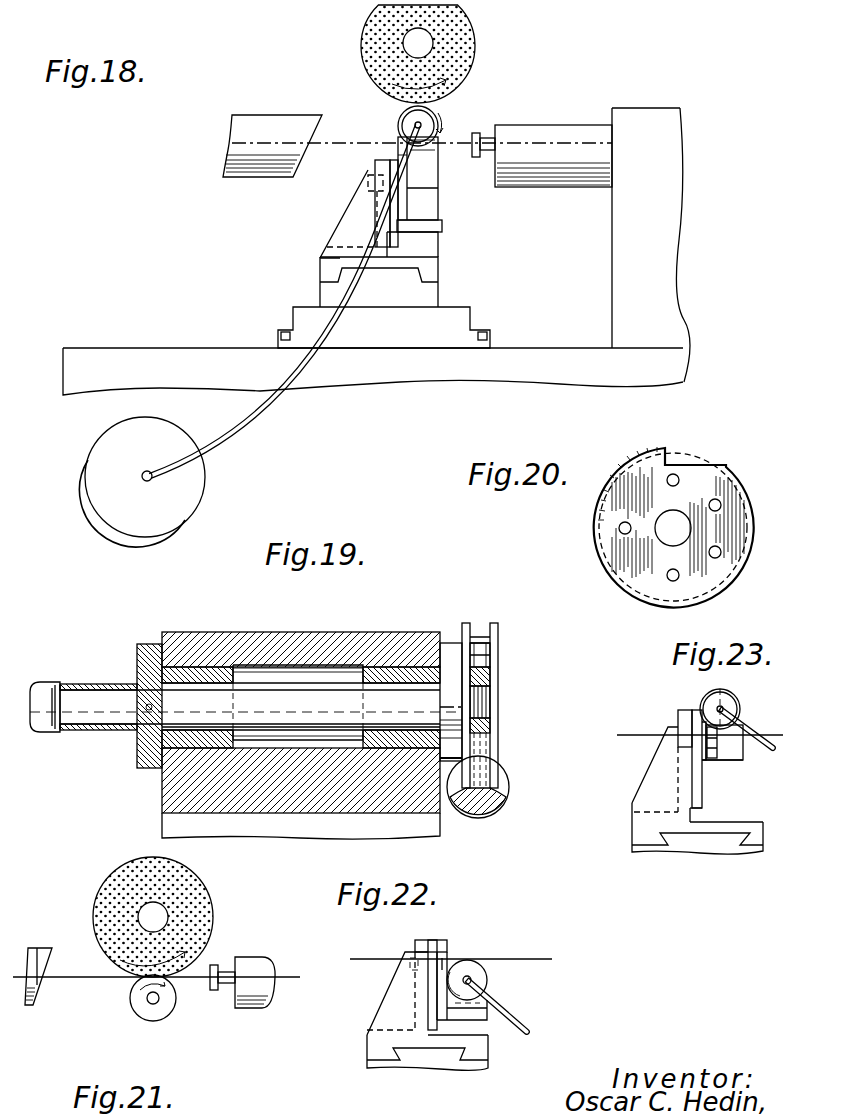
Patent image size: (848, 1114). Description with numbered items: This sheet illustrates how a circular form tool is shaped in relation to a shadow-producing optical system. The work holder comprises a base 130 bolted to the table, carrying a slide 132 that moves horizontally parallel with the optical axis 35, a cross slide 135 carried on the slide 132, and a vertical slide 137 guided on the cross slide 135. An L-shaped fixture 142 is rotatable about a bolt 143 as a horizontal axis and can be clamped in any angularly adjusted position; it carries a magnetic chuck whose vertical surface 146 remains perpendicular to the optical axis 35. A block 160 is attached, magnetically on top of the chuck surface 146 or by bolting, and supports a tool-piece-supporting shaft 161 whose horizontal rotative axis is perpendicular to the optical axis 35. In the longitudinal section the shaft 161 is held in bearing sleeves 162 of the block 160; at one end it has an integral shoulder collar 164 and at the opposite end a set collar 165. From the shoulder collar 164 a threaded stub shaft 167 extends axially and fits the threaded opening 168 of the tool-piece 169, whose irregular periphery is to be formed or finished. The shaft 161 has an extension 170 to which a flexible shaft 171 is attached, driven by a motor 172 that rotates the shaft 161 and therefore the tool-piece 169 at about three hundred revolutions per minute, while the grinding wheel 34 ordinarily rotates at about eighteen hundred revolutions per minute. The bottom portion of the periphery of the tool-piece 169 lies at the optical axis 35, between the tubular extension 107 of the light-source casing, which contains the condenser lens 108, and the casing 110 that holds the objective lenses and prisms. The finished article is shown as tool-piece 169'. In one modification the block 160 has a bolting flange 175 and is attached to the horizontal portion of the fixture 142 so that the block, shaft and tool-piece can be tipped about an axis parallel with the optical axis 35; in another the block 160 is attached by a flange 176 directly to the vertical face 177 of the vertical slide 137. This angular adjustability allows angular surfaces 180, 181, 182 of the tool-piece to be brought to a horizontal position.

In FIG. 18, the grinding wheel 34 is at (476, 42).
In FIG. 21, the grinding wheel 34 is at (204, 893).
In FIG. 18, the optical axis 35 is at (362, 134).
In FIG. 19, the optical axis 35 is at (494, 813).
In FIG. 23, the optical axis 35 is at (640, 735).
In FIG. 21, the optical axis 35 is at (203, 985).
In FIG. 22, the optical axis 35 is at (375, 952).
In FIG. 18, the tubular extension 107 is at (284, 103).
In FIG. 19, the tubular extension 107 is at (505, 778).
In FIG. 21, the tubular extension 107 is at (38, 948).
In FIG. 19, the condenser lens 108 is at (498, 808).
In FIG. 18, the casing 110 is at (551, 128).
In FIG. 21, the casing 110 is at (250, 961).
In FIG. 18, the base 130 is at (470, 323).
In FIG. 18, the slide 132 is at (438, 290).
In FIG. 23, the slide 132 is at (760, 850).
In FIG. 22, the slide 132 is at (488, 1066).
In FIG. 18, the cross slide 135 is at (437, 250).
In FIG. 23, the cross slide 135 is at (762, 832).
In FIG. 22, the cross slide 135 is at (480, 1048).
In FIG. 18, the vertical slide 137 is at (382, 164).
In FIG. 23, the vertical slide 137 is at (703, 806).
In FIG. 22, the vertical slide 137 is at (433, 942).
In FIG. 18, the fixture 142 is at (442, 230).
In FIG. 22, the fixture 142 is at (449, 945).
In FIG. 18, the bolt 143 is at (371, 192).
In FIG. 23, the bolt 143 is at (670, 752).
In FIG. 22, the bolt 143 is at (412, 968).
In FIG. 18, the magnetic chuck vertical surface 146 is at (438, 200).
In FIG. 19, the magnetic chuck vertical surface 146 is at (162, 825).
In FIG. 18, the block 160 is at (440, 148).
In FIG. 19, the block 160 is at (292, 632).
In FIG. 23, the block 160 is at (741, 712).
In FIG. 22, the block 160 is at (490, 973).
In FIG. 18, the tool-piece-supporting shaft 161 is at (426, 120).
In FIG. 19, the tool-piece-supporting shaft 161 is at (346, 709).
In FIG. 23, the tool-piece-supporting shaft 161 is at (713, 692).
In FIG. 21, the tool-piece-supporting shaft 161 is at (150, 1003).
In FIG. 22, the tool-piece-supporting shaft 161 is at (472, 984).
In FIG. 19, the bearing sleeves 162 is at (205, 667).
In FIG. 19, the shoulder collar 164 is at (452, 643).
In FIG. 19, the set collar 165 is at (152, 644).
In FIG. 19, the stub shaft 167 is at (494, 706).
In FIG. 20, the threaded opening 168 is at (663, 542).
In FIG. 19, the threaded opening 168 is at (480, 680).
In FIG. 18, the tool-piece 169 is at (383, 115).
In FIG. 19, the tool-piece 169 is at (507, 653).
In FIG. 23, the tool-piece 169 is at (748, 702).
In FIG. 21, the tool-piece 169 is at (119, 998).
In FIG. 20, the finished article 169' is at (695, 527).
In FIG. 19, the extension 170 is at (120, 731).
In FIG. 18, the flexible shaft 171 is at (339, 325).
In FIG. 19, the flexible shaft 171 is at (50, 733).
In FIG. 23, the flexible shaft 171 is at (768, 751).
In FIG. 18, the motor 172 is at (205, 486).
In FIG. 22, the bolting flange 175 is at (487, 1010).
In FIG. 23, the flange 176 is at (706, 766).
In FIG. 23, the vertical face 177 is at (704, 789).
In FIG. 19, the angular surface 180 is at (467, 628).
In FIG. 19, the angular surface 181 is at (481, 636).
In FIG. 19, the angular surface 182 is at (493, 633).